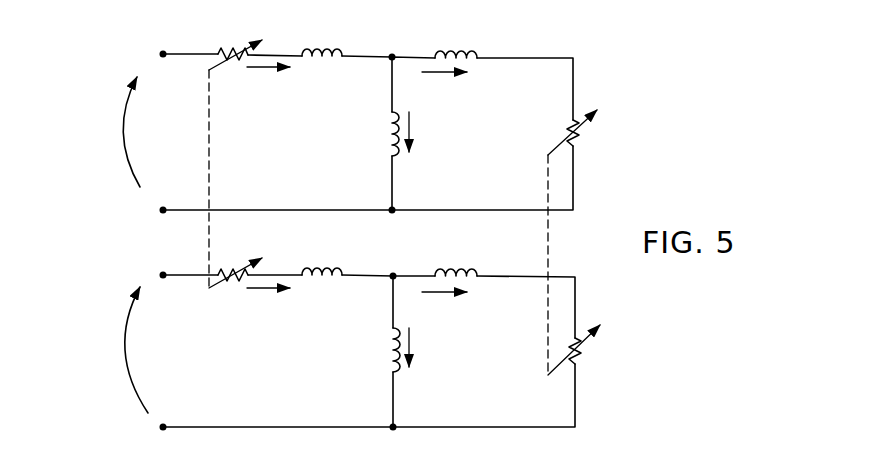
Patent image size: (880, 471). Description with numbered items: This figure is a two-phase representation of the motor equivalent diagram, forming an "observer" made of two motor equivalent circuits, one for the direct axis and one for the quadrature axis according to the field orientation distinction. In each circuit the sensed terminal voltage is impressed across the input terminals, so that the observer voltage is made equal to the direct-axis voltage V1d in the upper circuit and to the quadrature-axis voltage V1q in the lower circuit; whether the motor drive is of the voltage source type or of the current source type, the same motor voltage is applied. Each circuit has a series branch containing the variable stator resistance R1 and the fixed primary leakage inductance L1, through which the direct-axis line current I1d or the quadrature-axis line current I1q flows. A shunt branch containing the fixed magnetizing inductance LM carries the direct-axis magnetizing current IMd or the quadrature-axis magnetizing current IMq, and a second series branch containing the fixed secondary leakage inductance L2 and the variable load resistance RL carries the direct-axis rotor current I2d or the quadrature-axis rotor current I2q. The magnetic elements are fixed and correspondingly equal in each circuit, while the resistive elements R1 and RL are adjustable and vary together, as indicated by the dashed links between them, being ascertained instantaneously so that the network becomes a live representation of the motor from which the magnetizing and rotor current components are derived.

The stator resistance R1 is at (233, 151).
The primary leakage inductance L1 is at (330, 147).
The secondary leakage inductance L2 is at (463, 147).
The magnetizing inductance LM is at (373, 241).
The load resistance RL is at (585, 242).
The direct-axis line current I1d is at (262, 73).
The direct-axis rotor current I2d is at (440, 77).
The direct-axis magnetizing current IMd is at (425, 122).
The quadrature-axis line current I1q is at (262, 294).
The quadrature-axis rotor current I2q is at (440, 297).
The quadrature-axis magnetizing current IMq is at (425, 332).
The direct-axis terminal voltage V1d is at (104, 112).
The quadrature-axis terminal voltage V1q is at (104, 332).